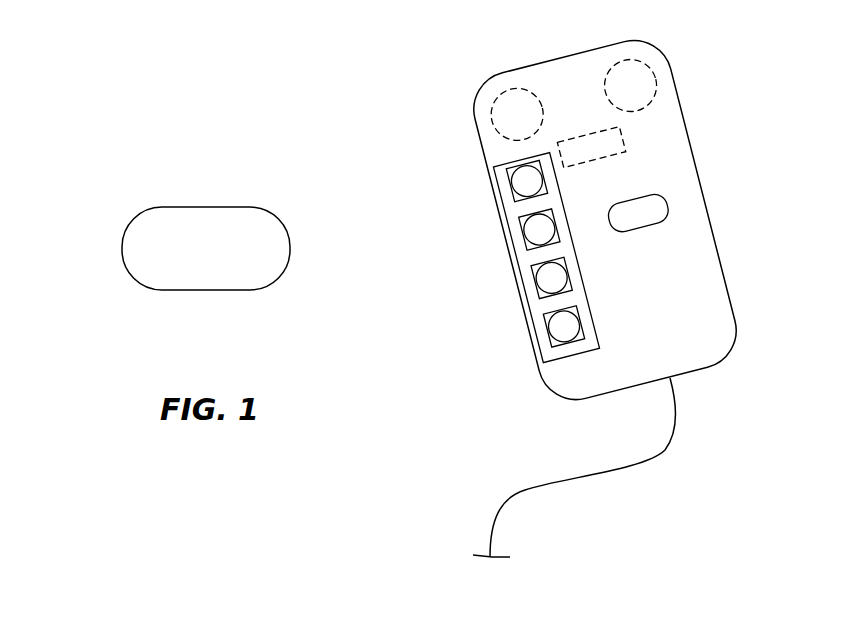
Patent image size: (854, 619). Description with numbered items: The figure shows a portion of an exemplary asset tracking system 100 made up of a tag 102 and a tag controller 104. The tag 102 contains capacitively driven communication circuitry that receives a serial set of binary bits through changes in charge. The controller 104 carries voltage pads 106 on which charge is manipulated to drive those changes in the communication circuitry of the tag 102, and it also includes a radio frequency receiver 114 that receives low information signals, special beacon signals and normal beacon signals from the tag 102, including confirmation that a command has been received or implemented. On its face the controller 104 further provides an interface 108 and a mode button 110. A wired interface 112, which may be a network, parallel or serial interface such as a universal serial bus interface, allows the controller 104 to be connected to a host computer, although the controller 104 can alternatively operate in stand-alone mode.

The asset tracking system 100 is at (216, 82).
The tag 102 is at (160, 207).
The controller 104 is at (600, 372).
The voltage pads 106 is at (490, 110).
The interface 108 is at (520, 265).
The mode button 110 is at (637, 217).
The wired interface 112 is at (525, 490).
The radio frequency receiver 114 is at (625, 140).